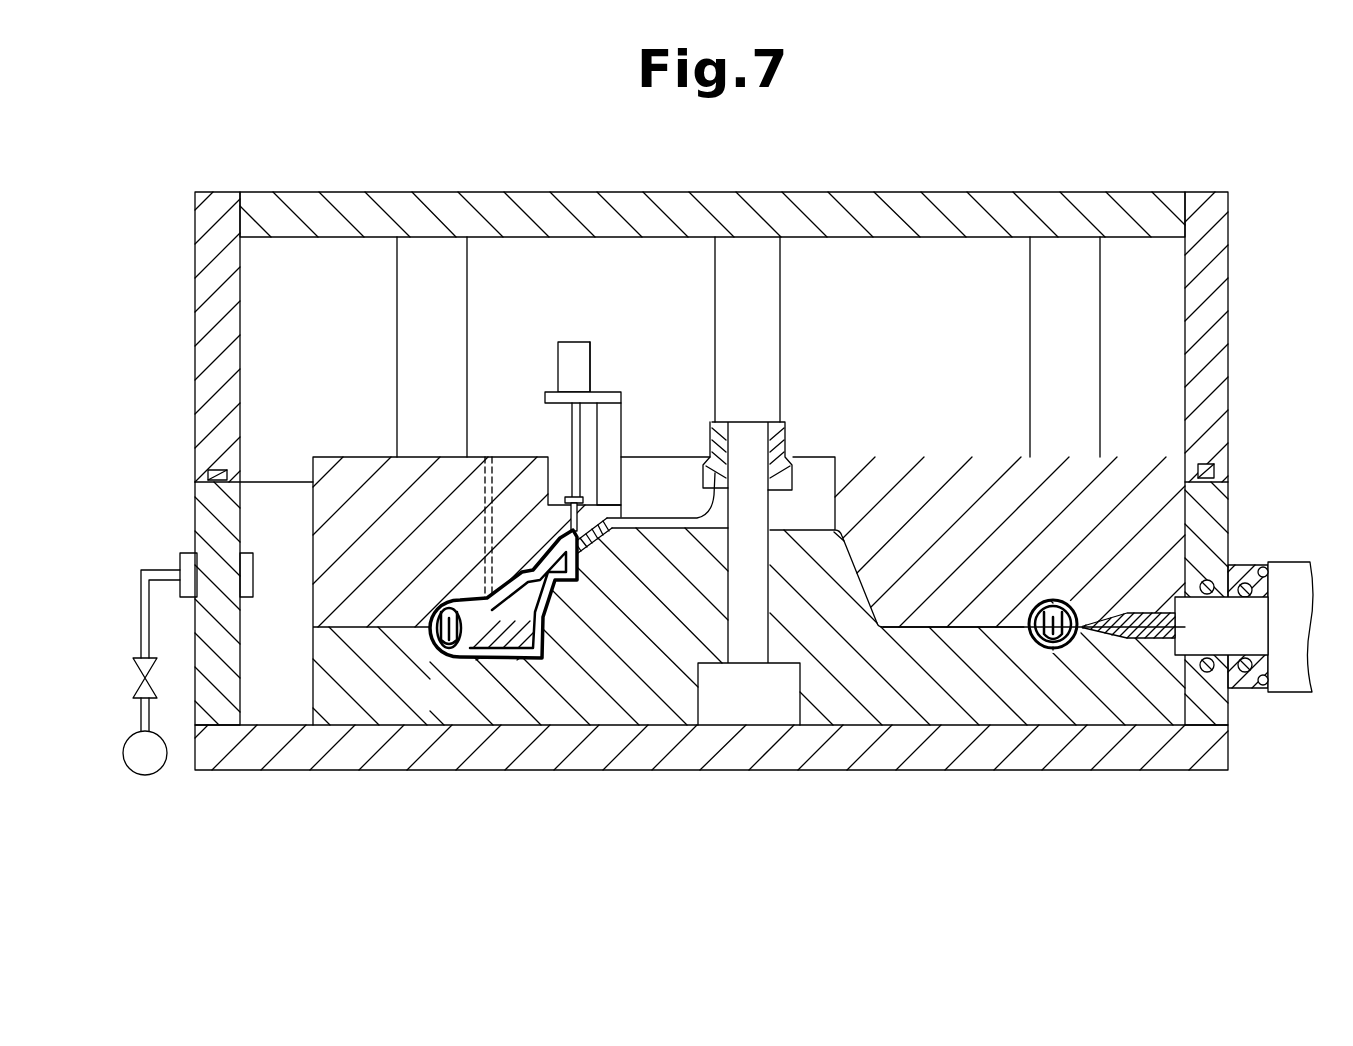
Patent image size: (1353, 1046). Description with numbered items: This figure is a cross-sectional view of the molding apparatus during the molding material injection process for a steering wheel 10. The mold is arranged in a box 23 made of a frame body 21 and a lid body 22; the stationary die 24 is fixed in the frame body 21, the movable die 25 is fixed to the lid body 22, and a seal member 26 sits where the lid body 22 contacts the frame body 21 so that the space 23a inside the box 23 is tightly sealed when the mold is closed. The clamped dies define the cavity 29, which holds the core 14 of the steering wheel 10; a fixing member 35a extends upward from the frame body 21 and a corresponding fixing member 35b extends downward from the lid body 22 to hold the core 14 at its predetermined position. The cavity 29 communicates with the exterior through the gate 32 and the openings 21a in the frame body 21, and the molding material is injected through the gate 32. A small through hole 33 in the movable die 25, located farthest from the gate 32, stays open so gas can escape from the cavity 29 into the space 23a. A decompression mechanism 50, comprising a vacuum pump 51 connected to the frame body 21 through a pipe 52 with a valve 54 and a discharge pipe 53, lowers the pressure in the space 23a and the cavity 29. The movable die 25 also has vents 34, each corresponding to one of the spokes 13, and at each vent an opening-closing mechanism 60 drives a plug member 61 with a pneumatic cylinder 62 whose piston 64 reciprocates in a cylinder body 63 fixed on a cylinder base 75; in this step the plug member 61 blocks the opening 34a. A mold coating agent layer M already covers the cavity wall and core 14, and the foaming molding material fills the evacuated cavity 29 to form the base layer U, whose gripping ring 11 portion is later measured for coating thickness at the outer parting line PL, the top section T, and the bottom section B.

The steering wheel 10 is at (721, 591).
The gripping ring 11 is at (437, 605).
The spokes 13 is at (545, 630).
The core 14 is at (651, 517).
The frame body 21 is at (1232, 494).
The openings 21a is at (1235, 650).
The lid body 22 is at (1216, 470).
The box 23 is at (740, 457).
The space 23a is at (313, 252).
The stationary die 24 is at (313, 645).
The movable die 25 is at (313, 610).
The seal member 26 is at (207, 473).
The cavity 29 is at (1070, 610).
The gate 32 is at (1110, 640).
The through hole 33 is at (484, 540).
The vents 34 is at (571, 533).
The opening 34a is at (565, 503).
The fixing member 35a is at (772, 510).
The fixing member 35b is at (780, 382).
The decompression mechanism 50 is at (155, 611).
The vacuum pump 51 is at (123, 753).
The pipe 52 is at (140, 590).
The discharge pipe 53 is at (180, 560).
The valve 54 is at (133, 672).
The opening-closing mechanism 60 is at (587, 382).
The plug member 61 is at (563, 457).
The pneumatic cylinder 62 is at (558, 357).
The cylinder body 63 is at (590, 357).
The piston 64 is at (562, 398).
The cylinder base 75 is at (621, 424).
The bottom section B is at (1050, 600).
The top section T is at (1053, 650).
The mold coating agent layer M is at (476, 660).
The base layer U is at (517, 660).
The outer parting line PL is at (1080, 628).